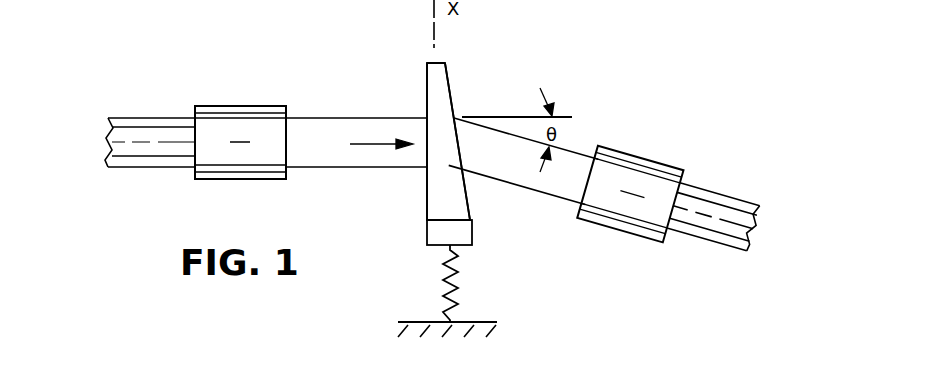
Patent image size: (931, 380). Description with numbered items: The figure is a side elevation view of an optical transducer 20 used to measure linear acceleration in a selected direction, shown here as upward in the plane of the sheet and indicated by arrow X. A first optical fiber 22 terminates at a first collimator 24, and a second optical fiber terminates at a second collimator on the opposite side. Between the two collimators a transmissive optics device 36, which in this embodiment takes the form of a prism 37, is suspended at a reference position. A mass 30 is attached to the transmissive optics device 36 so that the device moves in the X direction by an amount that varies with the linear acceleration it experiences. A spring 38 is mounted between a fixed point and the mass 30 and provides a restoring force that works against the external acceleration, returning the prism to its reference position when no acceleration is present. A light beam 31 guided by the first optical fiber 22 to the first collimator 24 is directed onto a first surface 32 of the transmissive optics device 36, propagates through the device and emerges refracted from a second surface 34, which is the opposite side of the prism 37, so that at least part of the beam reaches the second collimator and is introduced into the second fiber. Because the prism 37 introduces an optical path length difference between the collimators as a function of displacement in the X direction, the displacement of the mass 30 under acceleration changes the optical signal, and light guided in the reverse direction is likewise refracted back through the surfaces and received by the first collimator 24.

The optical transducer 20 is at (566, 75).
The first optical fiber 22 is at (125, 116).
The first collimator 24 is at (233, 103).
The mass 30 is at (427, 232).
The light beam 31 is at (313, 117).
The first surface 32 is at (427, 190).
The second surface 34 is at (452, 92).
The transmissive optics device 36 is at (488, 66).
The prism 37 is at (424, 85).
The spring 38 is at (455, 290).